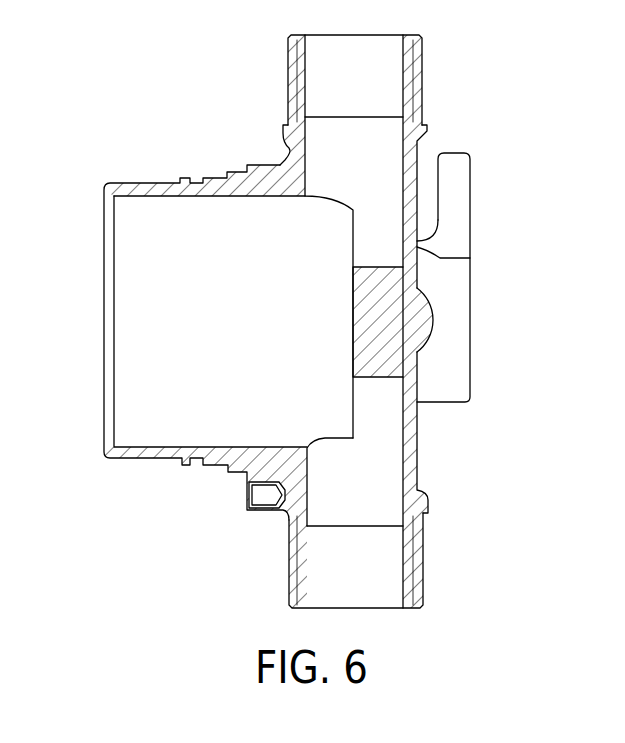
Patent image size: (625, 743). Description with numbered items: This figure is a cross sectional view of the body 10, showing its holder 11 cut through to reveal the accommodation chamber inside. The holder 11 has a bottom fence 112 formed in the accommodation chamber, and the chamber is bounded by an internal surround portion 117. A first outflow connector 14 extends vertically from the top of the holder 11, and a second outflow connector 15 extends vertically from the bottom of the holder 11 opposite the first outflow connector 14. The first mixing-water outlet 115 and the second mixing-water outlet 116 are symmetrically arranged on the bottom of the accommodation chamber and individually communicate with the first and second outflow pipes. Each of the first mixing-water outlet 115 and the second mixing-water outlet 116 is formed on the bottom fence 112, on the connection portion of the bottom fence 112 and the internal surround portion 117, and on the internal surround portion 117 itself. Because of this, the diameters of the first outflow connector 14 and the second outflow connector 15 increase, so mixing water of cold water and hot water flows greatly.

The body 10 is at (478, 313).
The holder 11 is at (141, 183).
The first outflow connector 14 is at (425, 78).
The second outflow connector 15 is at (423, 562).
The bottom fence 112 is at (352, 334).
The first mixing-water outlet 115 is at (343, 225).
The second mixing-water outlet 116 is at (343, 413).
The internal surround portion 117 is at (175, 197).